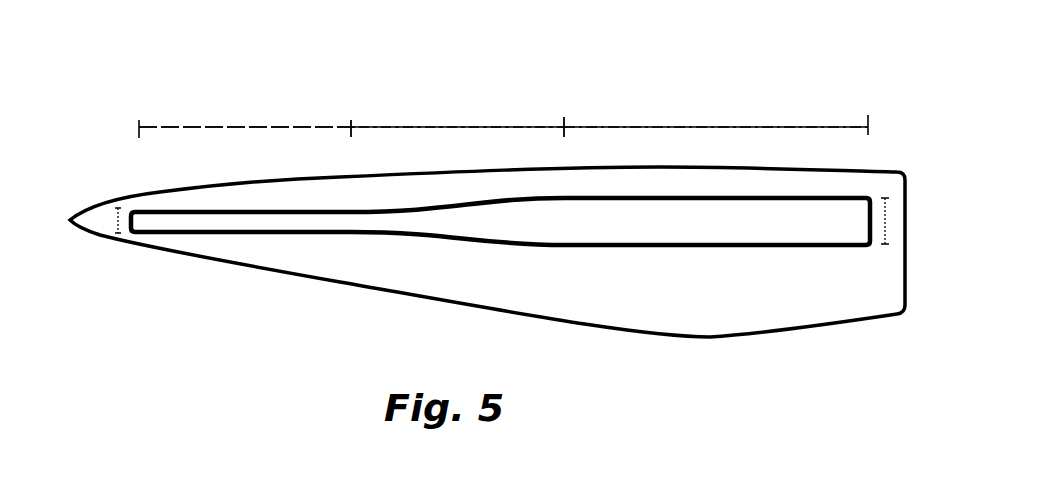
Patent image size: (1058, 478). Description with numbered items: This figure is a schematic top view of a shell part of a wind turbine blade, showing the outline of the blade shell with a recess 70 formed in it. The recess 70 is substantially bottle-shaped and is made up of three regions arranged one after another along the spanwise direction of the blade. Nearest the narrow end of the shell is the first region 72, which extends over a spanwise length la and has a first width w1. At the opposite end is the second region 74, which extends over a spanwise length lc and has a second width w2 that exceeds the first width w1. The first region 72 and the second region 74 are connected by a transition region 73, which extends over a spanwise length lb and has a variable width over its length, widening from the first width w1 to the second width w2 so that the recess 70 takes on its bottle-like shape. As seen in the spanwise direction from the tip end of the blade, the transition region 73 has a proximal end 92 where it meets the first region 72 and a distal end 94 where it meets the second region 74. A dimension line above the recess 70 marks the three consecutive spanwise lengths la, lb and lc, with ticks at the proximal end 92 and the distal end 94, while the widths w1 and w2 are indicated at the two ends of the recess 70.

The recess 70 is at (498, 286).
The first region 72 is at (201, 222).
The transition region 73 is at (468, 222).
The second region 74 is at (792, 223).
The proximal end 92 is at (351, 137).
The distal end 94 is at (564, 135).
The first width w1 is at (114, 222).
The second width w2 is at (888, 220).
The spanwise length of first region la is at (245, 116).
The spanwise length of transition region lb is at (457, 115).
The spanwise length of second region lc is at (716, 115).